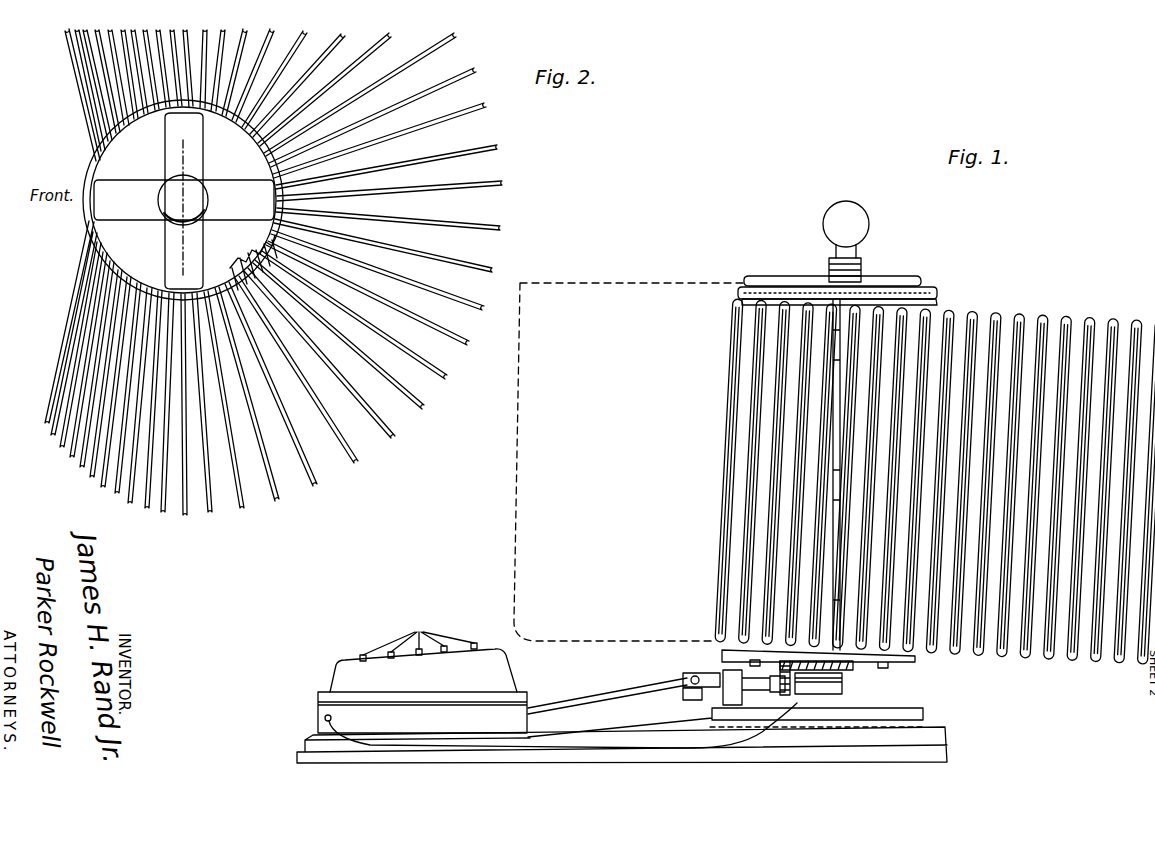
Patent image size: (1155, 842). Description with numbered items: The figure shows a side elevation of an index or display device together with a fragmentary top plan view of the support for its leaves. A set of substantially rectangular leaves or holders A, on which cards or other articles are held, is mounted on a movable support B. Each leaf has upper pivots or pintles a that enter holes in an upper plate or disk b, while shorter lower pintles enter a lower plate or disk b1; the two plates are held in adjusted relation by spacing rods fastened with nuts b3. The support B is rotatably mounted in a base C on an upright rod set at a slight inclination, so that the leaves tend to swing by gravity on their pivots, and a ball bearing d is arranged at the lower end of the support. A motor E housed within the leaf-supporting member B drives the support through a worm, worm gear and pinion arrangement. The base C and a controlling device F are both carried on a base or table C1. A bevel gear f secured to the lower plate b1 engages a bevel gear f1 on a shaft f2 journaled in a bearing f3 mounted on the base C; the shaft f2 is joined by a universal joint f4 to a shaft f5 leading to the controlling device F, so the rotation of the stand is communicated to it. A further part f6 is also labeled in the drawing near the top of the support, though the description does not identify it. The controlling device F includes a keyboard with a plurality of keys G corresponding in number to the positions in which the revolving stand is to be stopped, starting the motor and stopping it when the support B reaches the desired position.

In FIG. 2, the leaves or holders A is at (497, 150).
In FIG. 1, the leaves or holders A is at (650, 283).
In FIG. 2, the upper pivots or pintles a is at (248, 250).
In FIG. 1, the upper pivots or pintles a is at (766, 300).
In FIG. 2, the upper plate or disk b is at (218, 270).
In FIG. 1, the upper plate or disk b is at (934, 297).
In FIG. 1, the lower plate or disk b1 is at (915, 658).
In FIG. 1, the nuts b3 is at (888, 662).
In FIG. 1, the support B is at (837, 277).
In FIG. 1, the base C is at (920, 714).
In FIG. 1, the base or table C1 is at (622, 745).
In FIG. 1, the ball bearing d is at (842, 677).
In FIG. 1, the motor E is at (834, 468).
In FIG. 1, the bevel gear f is at (852, 665).
In FIG. 1, the bevel gear f1 is at (792, 694).
In FIG. 1, the shaft f2 is at (710, 673).
In FIG. 1, the bearing f3 is at (754, 687).
In FIG. 2, the universal joint f4 is at (184, 201).
In FIG. 1, the universal joint f4 is at (882, 276).
In FIG. 2, the shaft f5 is at (193, 194).
In FIG. 1, the shaft f5 is at (823, 224).
In FIG. 1, the lamp base f6 is at (830, 268).
In FIG. 1, the controlling device F is at (557, 698).
In FIG. 1, the keys G is at (418, 636).